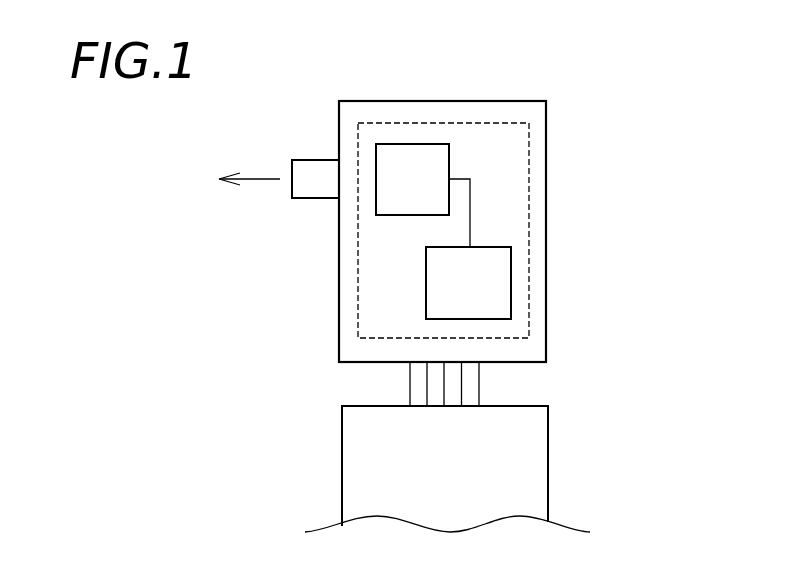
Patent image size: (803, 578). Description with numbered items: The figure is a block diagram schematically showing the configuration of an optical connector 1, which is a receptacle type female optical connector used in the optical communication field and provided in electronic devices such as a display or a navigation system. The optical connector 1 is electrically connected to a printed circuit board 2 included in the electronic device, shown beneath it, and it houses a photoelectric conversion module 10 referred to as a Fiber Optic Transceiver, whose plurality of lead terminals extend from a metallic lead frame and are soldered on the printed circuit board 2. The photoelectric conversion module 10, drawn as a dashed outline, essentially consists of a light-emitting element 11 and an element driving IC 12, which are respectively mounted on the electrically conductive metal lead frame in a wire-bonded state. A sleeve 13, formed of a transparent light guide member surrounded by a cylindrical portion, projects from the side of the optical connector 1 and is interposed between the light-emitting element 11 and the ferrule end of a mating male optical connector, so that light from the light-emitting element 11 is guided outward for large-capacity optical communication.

The optical connector 1 is at (522, 90).
The printed circuit board 2 is at (550, 445).
The photoelectric conversion module 10 is at (430, 123).
The light-emitting element 11 is at (449, 168).
The element driving IC 12 is at (495, 246).
The sleeve 13 is at (306, 160).